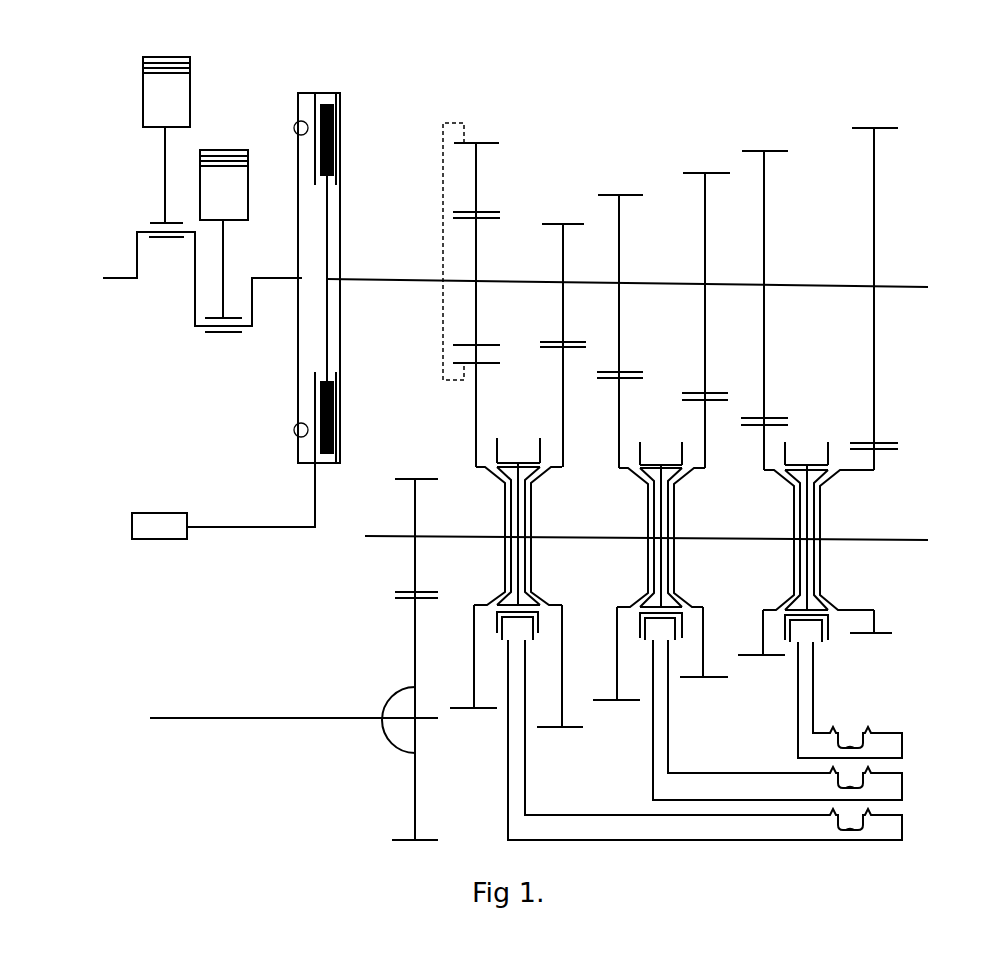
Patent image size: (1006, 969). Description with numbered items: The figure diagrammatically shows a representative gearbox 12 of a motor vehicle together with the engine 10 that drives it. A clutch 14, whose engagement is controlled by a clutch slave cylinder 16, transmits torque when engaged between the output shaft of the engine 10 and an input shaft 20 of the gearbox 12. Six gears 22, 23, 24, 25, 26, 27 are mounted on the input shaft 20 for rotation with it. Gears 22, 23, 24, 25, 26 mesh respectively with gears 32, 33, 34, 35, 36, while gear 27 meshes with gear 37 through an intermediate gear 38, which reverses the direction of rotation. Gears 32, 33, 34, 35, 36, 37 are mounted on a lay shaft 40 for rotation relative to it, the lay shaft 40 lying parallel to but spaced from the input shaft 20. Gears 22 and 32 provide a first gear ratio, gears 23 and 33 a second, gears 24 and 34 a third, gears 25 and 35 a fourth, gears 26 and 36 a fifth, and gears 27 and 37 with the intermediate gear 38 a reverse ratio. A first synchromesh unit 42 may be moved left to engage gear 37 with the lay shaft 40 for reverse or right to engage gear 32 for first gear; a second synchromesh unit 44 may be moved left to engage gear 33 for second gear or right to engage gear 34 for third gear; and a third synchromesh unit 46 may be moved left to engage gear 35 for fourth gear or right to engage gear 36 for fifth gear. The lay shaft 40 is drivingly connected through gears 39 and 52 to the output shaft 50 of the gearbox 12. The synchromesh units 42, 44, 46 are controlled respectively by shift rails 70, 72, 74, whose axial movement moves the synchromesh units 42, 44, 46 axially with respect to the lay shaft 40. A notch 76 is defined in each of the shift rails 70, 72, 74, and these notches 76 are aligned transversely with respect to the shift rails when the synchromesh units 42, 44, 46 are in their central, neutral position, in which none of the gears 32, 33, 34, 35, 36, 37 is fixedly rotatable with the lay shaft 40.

The engine 10 is at (174, 371).
The gearbox 12 is at (275, 619).
The clutch 14 is at (333, 118).
The clutch slave cylinder 16 is at (145, 533).
The input shaft 20 is at (397, 283).
The gear 22 is at (560, 223).
The gear 23 is at (612, 193).
The gear 24 is at (693, 172).
The gear 25 is at (752, 150).
The gear 26 is at (860, 127).
The gear 27 is at (473, 250).
The gear 32 is at (567, 732).
The gear 33 is at (633, 705).
The gear 34 is at (708, 682).
The gear 35 is at (772, 660).
The gear 36 is at (883, 635).
The gear 37 is at (467, 715).
The intermediate gear 38 is at (485, 140).
The gear 39 is at (413, 550).
The lay shaft 40 is at (912, 542).
The first synchromesh unit 42 is at (530, 513).
The second synchromesh unit 44 is at (672, 510).
The third synchromesh unit 46 is at (812, 517).
The output shaft 50 is at (172, 720).
The gear 52 is at (413, 818).
The shift rail 70 is at (890, 835).
The shift rail 72 is at (902, 790).
The shift rail 74 is at (893, 747).
The notch 76 is at (851, 828).